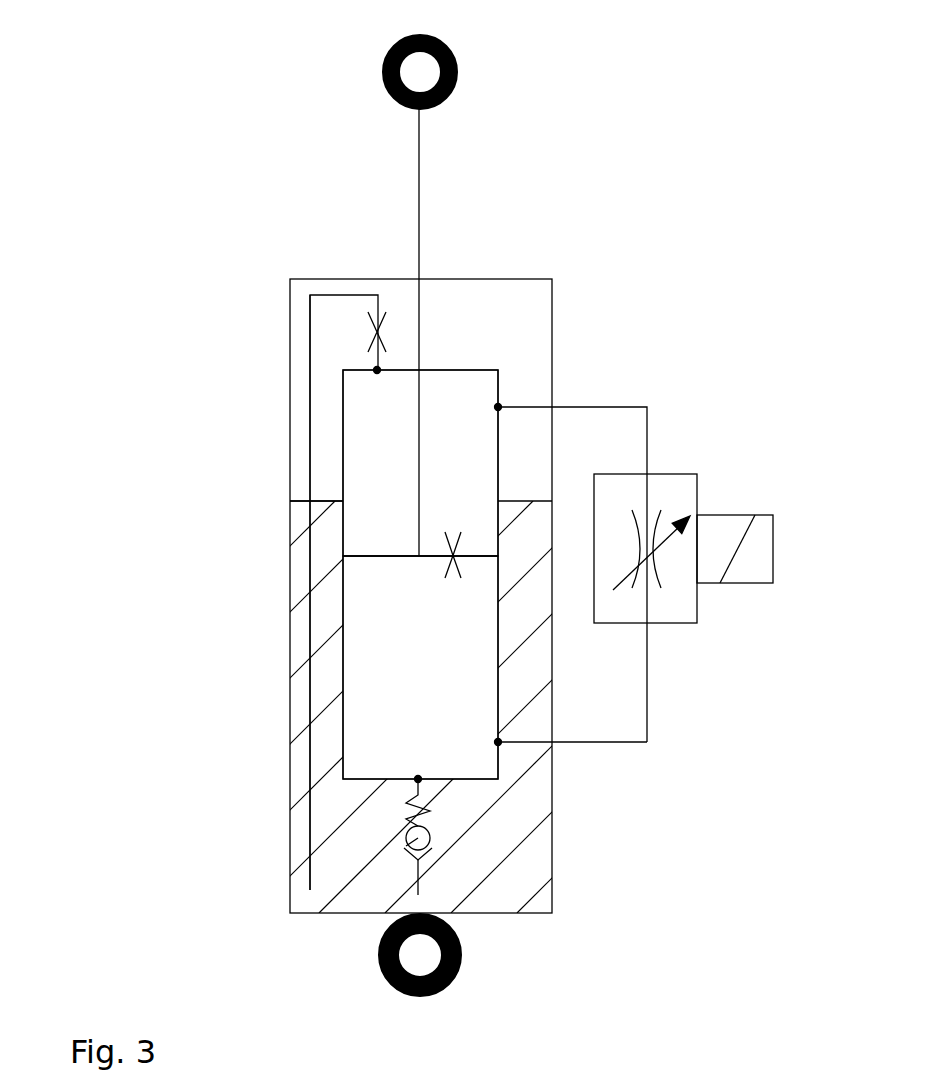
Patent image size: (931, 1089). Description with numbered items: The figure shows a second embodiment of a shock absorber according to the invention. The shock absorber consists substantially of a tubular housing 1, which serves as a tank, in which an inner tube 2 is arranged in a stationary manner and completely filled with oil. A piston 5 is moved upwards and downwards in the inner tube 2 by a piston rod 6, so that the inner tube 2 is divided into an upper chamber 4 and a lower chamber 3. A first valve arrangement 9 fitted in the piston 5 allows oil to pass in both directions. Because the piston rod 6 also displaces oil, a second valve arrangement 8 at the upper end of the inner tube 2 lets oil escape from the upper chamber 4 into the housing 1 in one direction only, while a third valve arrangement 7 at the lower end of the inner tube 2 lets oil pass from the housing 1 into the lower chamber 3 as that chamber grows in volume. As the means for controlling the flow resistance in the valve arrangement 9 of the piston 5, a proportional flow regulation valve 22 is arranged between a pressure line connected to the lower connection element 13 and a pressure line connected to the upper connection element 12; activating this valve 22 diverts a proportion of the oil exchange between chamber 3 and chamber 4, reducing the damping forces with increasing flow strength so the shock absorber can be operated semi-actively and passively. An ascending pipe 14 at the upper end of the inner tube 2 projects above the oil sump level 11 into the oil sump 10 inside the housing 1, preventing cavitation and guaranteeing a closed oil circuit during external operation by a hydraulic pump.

The tubular housing 1 is at (464, 597).
The inner tube 2 is at (601, 600).
The lower chamber 3 is at (297, 684).
The upper chamber 4 is at (303, 428).
The piston 5 is at (316, 482).
The piston rod 6 is at (306, 299).
The third valve arrangement 7 is at (219, 877).
The second valve arrangement 8 is at (550, 517).
The first valve arrangement 9 is at (260, 604).
The oil sump 10 is at (200, 695).
The oil sump level 11 is at (232, 479).
The upper connection element 12 is at (643, 498).
The lower connection element 13 is at (662, 801).
The ascending pipe 14 is at (169, 398).
The proportional flow regulation valve 22 is at (778, 483).